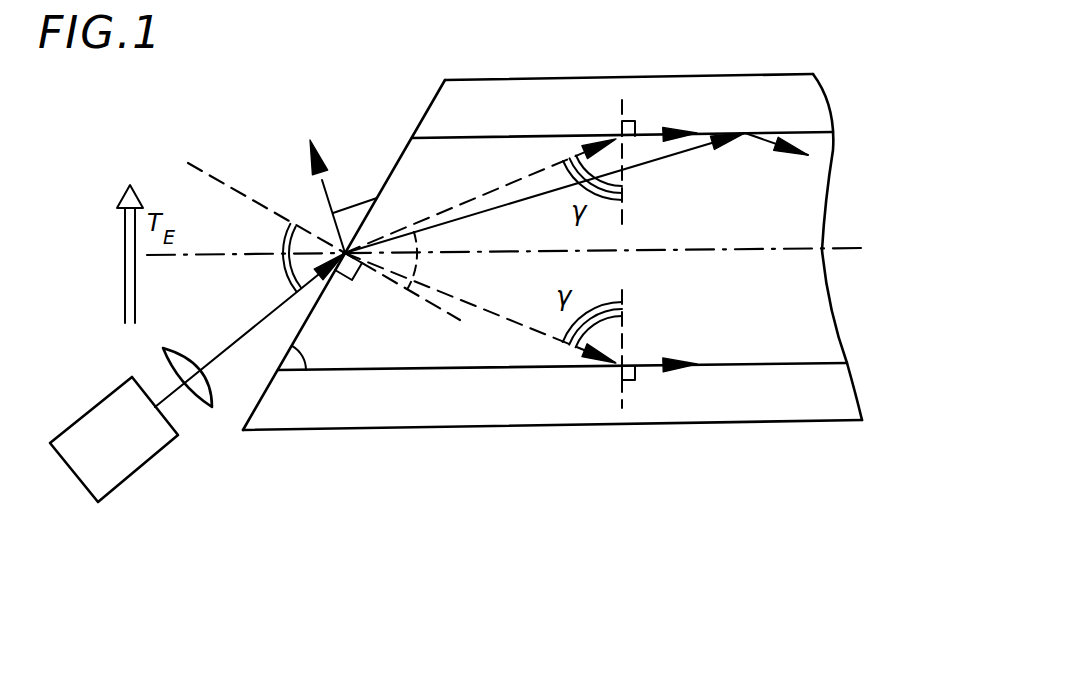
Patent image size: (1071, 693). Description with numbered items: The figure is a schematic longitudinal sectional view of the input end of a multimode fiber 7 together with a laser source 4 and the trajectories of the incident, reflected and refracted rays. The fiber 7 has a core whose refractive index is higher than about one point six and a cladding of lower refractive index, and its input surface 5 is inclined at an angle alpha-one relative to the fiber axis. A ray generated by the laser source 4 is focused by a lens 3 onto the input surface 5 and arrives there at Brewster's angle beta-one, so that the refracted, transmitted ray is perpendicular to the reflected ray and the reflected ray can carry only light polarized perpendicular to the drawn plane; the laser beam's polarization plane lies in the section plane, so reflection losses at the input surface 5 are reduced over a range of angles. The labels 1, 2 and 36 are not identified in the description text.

The optical waveguide 1 is at (763, 275).
The cladding layer 2 is at (758, 97).
The lens 3 is at (230, 113).
The laser source 4 is at (132, 473).
The input surface 5 is at (423, 122).
The multimode fiber 7 is at (592, 77).
The lens 36 is at (238, 345).